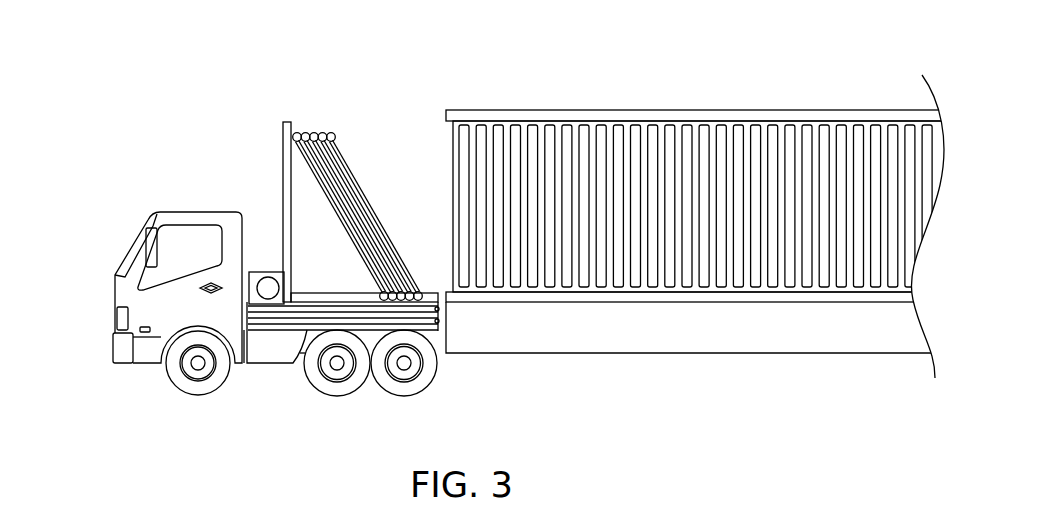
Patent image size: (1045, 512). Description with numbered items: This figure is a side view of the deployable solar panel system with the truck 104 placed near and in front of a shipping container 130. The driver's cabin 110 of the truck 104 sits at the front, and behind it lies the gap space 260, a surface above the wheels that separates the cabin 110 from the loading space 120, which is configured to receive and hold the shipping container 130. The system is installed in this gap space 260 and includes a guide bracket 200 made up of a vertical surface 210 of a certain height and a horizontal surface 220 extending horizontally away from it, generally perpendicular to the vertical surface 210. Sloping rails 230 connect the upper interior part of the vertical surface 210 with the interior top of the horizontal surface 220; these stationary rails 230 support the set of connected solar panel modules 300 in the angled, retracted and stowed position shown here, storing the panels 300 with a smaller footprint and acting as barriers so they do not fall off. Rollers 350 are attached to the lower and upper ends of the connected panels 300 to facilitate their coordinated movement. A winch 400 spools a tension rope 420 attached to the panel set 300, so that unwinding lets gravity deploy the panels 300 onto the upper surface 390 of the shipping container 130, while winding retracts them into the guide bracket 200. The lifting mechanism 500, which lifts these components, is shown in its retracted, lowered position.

The truck 104 is at (99, 295).
The driver's cabin 110 is at (200, 212).
The loading space 120 is at (677, 340).
The shipping container 130 is at (692, 110).
The guide bracket 200 is at (270, 139).
The vertical surface 210 is at (287, 121).
The horizontal surface 220 is at (440, 303).
The rails 230 is at (333, 208).
The gap space 260 is at (448, 343).
The set of connected solar panel modules 300 is at (343, 157).
The rollers 350 is at (331, 133).
The upper surface 390 is at (559, 98).
The winch 400 is at (268, 271).
The tension rope 420 is at (328, 292).
The lifting mechanism 500 is at (269, 349).